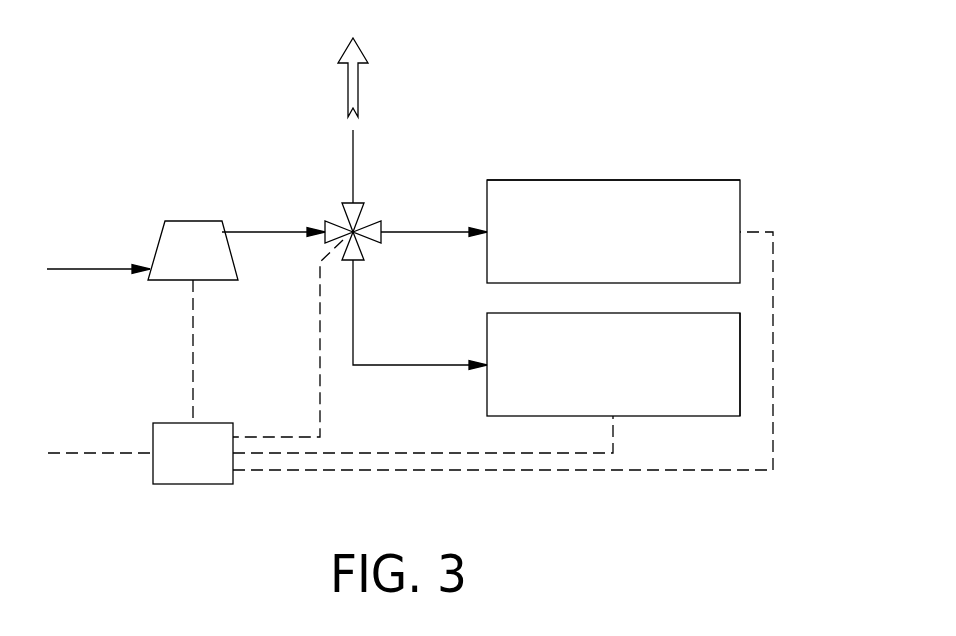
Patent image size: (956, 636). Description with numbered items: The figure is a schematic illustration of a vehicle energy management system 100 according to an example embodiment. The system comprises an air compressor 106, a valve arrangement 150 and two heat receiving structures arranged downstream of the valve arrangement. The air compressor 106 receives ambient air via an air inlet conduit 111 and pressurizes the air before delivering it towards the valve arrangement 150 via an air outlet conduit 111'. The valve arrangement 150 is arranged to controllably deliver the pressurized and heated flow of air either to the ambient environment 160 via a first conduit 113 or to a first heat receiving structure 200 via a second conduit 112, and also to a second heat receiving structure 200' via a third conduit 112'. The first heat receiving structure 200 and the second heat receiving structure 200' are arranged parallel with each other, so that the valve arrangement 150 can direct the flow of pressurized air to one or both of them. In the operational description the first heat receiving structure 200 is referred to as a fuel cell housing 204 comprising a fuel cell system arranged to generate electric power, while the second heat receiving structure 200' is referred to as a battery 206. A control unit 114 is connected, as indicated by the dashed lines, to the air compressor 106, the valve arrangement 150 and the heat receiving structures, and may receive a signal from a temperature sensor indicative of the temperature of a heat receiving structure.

The vehicle energy management system 100 is at (173, 93).
The air compressor 106 is at (192, 221).
The air inlet conduit 111 is at (92, 228).
The air outlet conduit 111' is at (262, 186).
The second conduit 112 is at (443, 186).
The third conduit 112' is at (420, 315).
The first conduit 113 is at (352, 167).
The control unit 114 is at (190, 484).
The valve arrangement 150 is at (372, 210).
The ambient environment 160 is at (348, 90).
The first heat receiving structure 200 is at (640, 184).
The second heat receiving structure 200' is at (674, 355).
The fuel cell housing 204 is at (617, 180).
The battery 206 is at (742, 367).